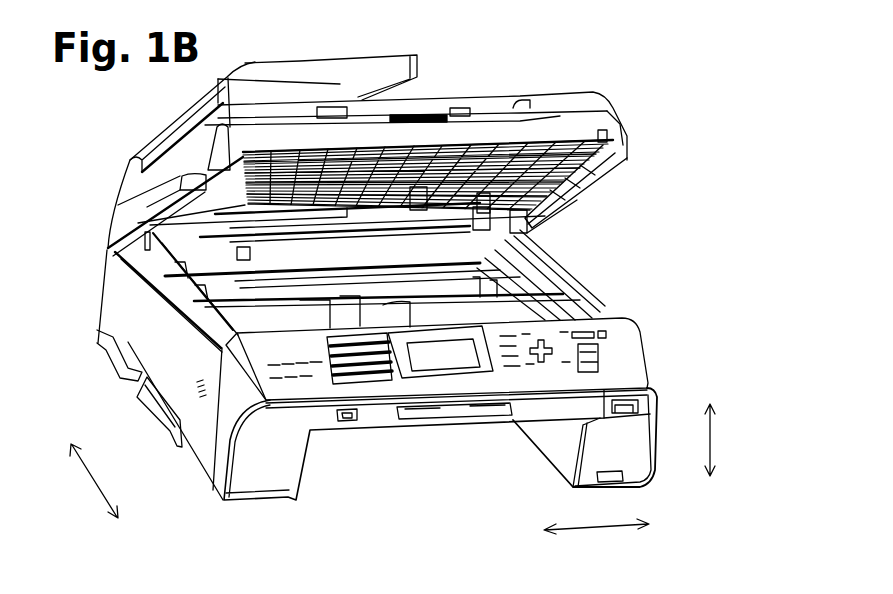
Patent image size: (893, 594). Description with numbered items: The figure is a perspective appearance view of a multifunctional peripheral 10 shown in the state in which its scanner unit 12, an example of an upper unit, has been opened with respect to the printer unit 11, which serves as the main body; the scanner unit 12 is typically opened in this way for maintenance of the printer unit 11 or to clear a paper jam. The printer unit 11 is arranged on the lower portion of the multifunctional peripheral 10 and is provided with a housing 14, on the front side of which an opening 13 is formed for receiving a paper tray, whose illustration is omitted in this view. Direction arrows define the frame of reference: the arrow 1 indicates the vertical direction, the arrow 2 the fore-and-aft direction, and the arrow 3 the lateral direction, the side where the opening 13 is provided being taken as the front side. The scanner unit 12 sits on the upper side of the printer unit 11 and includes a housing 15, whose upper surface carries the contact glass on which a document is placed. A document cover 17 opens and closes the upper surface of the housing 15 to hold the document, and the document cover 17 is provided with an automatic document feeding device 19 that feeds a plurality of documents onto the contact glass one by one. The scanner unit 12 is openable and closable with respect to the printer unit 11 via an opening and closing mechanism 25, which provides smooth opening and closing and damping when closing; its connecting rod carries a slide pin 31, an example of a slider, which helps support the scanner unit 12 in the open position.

The arrow 1 is at (712, 438).
The arrow 2 is at (90, 483).
The arrow 3 is at (596, 528).
The multifunctional peripheral 10 is at (248, 524).
The printer unit 11 is at (597, 275).
The scanner unit 12 is at (597, 203).
The opening 13 is at (303, 450).
The housing 14 is at (103, 281).
The housing 15 is at (116, 203).
The document cover 17 is at (585, 88).
The automatic document feeding device 19 is at (427, 48).
The opening and closing mechanism 25 is at (238, 322).
The slide pin 31 is at (143, 224).